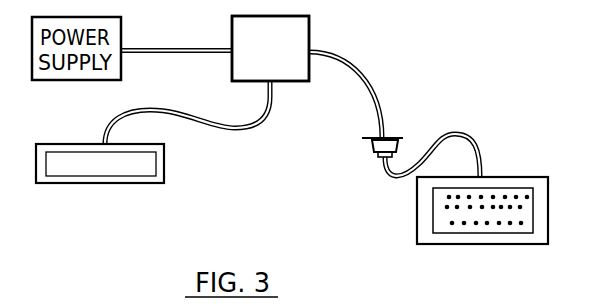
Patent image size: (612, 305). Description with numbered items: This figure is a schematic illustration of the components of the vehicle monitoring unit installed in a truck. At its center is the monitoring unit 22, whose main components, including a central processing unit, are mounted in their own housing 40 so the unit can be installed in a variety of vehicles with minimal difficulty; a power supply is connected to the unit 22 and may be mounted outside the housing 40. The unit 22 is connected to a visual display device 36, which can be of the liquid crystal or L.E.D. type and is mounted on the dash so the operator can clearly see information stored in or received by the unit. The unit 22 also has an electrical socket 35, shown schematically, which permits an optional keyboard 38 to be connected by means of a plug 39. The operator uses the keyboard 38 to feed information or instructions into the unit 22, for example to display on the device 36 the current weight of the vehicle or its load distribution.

The vehicle monitoring unit 22 is at (270, 48).
The electrical socket 35 is at (388, 142).
The visual display device 36 is at (165, 168).
The keyboard 38 is at (518, 177).
The plug 39 is at (372, 157).
The housing 40 is at (297, 45).